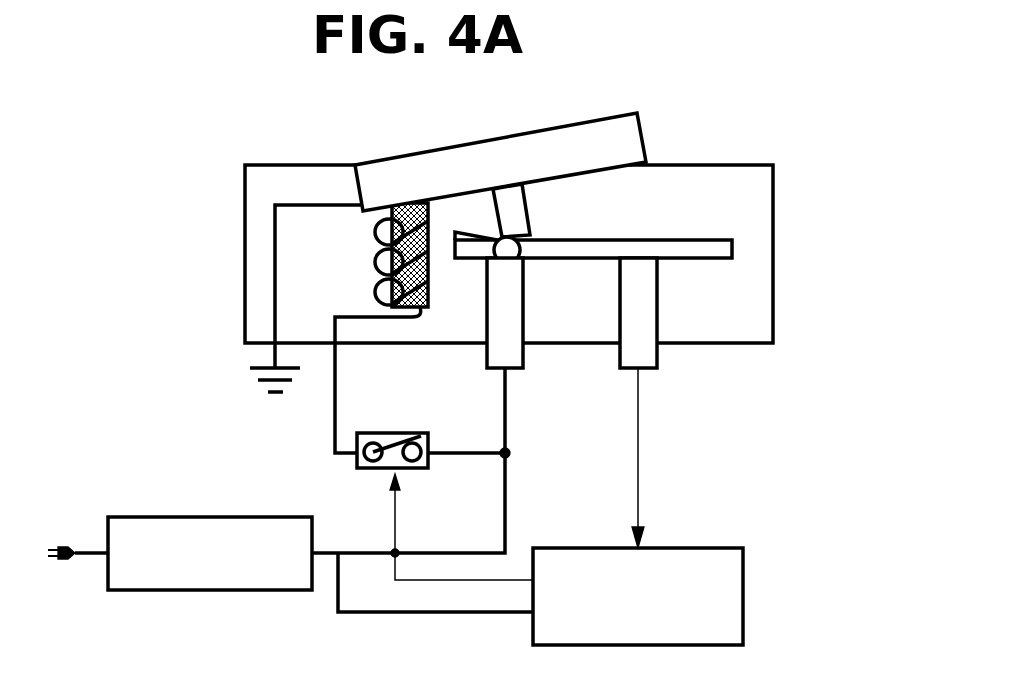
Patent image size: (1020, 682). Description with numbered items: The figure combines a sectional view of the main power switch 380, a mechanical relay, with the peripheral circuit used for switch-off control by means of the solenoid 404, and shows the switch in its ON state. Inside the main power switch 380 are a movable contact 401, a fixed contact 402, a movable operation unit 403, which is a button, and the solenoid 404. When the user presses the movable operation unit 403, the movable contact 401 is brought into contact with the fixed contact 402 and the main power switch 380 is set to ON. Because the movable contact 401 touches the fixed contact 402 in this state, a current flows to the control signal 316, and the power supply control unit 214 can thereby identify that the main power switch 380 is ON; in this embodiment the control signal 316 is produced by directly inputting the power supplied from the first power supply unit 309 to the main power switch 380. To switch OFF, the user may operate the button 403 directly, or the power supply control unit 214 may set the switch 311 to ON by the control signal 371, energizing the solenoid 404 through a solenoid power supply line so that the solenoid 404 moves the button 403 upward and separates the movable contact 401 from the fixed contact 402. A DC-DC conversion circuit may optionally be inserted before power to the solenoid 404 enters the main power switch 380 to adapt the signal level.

The main power switch 380 is at (270, 163).
The movable operation unit 403 is at (582, 122).
The movable contact 401 is at (604, 238).
The fixed contact 402 is at (658, 302).
The solenoid 404 is at (418, 316).
The switch 311 is at (417, 435).
The control signal 371 is at (397, 530).
The control signal 316 is at (639, 447).
The power supply control unit 214 is at (744, 598).
The first power supply unit 309 is at (205, 593).